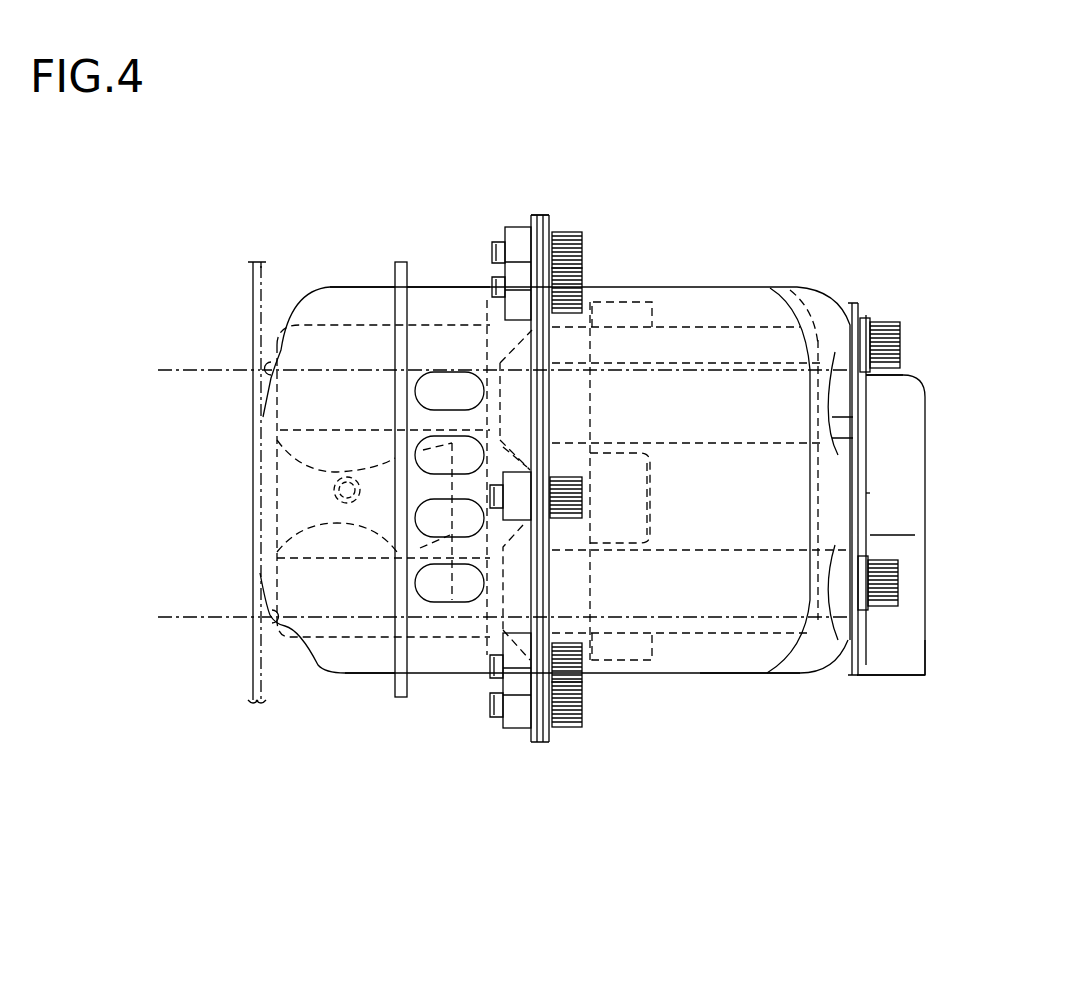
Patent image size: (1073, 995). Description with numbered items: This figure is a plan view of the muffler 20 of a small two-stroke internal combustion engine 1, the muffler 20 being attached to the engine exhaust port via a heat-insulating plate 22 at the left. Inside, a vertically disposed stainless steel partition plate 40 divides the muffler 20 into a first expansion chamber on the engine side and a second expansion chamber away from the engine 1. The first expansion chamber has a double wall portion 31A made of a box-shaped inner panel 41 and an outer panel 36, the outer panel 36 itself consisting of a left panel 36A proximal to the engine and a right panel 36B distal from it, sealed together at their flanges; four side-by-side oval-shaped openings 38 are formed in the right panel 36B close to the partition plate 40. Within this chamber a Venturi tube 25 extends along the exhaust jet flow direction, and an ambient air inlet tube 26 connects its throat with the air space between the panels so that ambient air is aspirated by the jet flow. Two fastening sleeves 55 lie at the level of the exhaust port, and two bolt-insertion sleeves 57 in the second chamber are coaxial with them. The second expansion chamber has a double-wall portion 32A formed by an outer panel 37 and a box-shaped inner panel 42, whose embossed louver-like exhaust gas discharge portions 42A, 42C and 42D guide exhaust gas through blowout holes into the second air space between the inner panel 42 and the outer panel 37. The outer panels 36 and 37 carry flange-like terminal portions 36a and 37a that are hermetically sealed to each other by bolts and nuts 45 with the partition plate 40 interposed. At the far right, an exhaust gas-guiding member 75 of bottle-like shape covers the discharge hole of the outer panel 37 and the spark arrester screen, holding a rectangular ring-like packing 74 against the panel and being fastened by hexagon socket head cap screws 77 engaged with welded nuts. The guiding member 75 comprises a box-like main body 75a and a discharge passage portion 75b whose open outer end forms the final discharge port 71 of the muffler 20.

The internal combustion engine 1 is at (205, 658).
The muffler 20 is at (340, 242).
The heat-insulating plate 22 is at (250, 282).
The Venturi tube 25 is at (323, 527).
The ambient air inlet tube 26 is at (333, 490).
The double wall portion 31A is at (358, 680).
The double-wall portion 32A is at (745, 682).
The outer panel 36 is at (470, 143).
The left panel 36A is at (358, 290).
The right panel 36B is at (440, 290).
The flange-like terminal portion 36a is at (533, 222).
The outer panel 37 is at (733, 297).
The flange-like terminal portion 37a is at (550, 222).
The oval-shaped openings 38 is at (418, 452).
The partition plate 40 is at (533, 743).
The inner panel 41 is at (313, 325).
The inner panel 42 is at (797, 284).
The exhaust gas discharge portion 42A is at (655, 470).
The exhaust gas discharge portion 42C is at (648, 655).
The exhaust gas discharge portion 42D is at (640, 300).
The bolts and nuts 45 is at (580, 282).
The fastening sleeves 55 is at (305, 372).
The bolt-insertion sleeves 57 is at (867, 402).
The final discharge port 71 is at (887, 678).
The packing 74 is at (870, 493).
The exhaust gas-guiding member 75 is at (930, 486).
The main body 75a is at (912, 442).
The discharge passage portion 75b is at (912, 655).
The hexagon socket head cap screws 77 is at (903, 343).